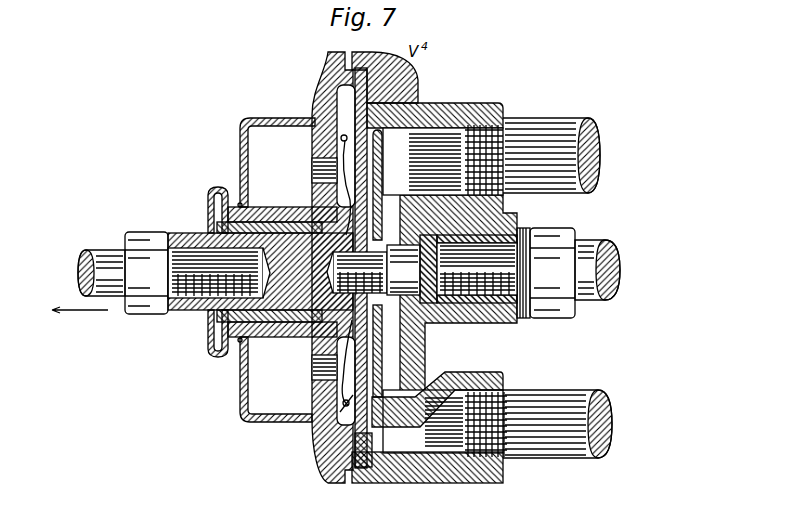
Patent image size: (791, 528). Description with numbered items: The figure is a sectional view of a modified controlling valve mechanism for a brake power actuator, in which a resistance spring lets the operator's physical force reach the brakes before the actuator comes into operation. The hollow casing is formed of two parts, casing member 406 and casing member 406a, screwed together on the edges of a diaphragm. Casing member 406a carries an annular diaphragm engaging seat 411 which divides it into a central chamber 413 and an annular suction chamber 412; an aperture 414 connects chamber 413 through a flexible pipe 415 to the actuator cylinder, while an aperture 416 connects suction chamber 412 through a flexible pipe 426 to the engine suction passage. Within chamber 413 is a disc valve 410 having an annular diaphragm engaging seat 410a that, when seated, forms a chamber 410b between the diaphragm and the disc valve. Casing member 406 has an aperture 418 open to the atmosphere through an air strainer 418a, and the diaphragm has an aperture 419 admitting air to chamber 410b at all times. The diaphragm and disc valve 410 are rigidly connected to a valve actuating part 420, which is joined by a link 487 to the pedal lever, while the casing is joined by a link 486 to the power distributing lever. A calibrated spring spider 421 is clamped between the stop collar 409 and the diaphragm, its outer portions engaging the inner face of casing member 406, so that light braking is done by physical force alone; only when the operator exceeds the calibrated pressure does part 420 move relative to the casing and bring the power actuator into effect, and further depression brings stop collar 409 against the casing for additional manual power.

The casing member 406 is at (328, 62).
The casing member 406a is at (413, 73).
The stop collar 409 is at (347, 213).
The disc valve 410 is at (392, 362).
The annular diaphragm engaging seat 410a is at (450, 380).
The chamber 410b is at (313, 168).
The annular diaphragm engaging seat 411 is at (382, 103).
The annular suction chamber 412 is at (395, 442).
The central chamber 413 is at (400, 143).
The aperture 414 is at (500, 110).
The flexible pipe 415 is at (590, 153).
The aperture 416 is at (452, 440).
The aperture 418 is at (333, 373).
The air strainer 418a is at (250, 380).
The aperture 419 is at (335, 380).
The valve actuating part 420 is at (188, 308).
The spring spider 421 is at (347, 412).
The flexible pipe 426 is at (600, 428).
The link 486 is at (620, 272).
The link 487 is at (77, 272).